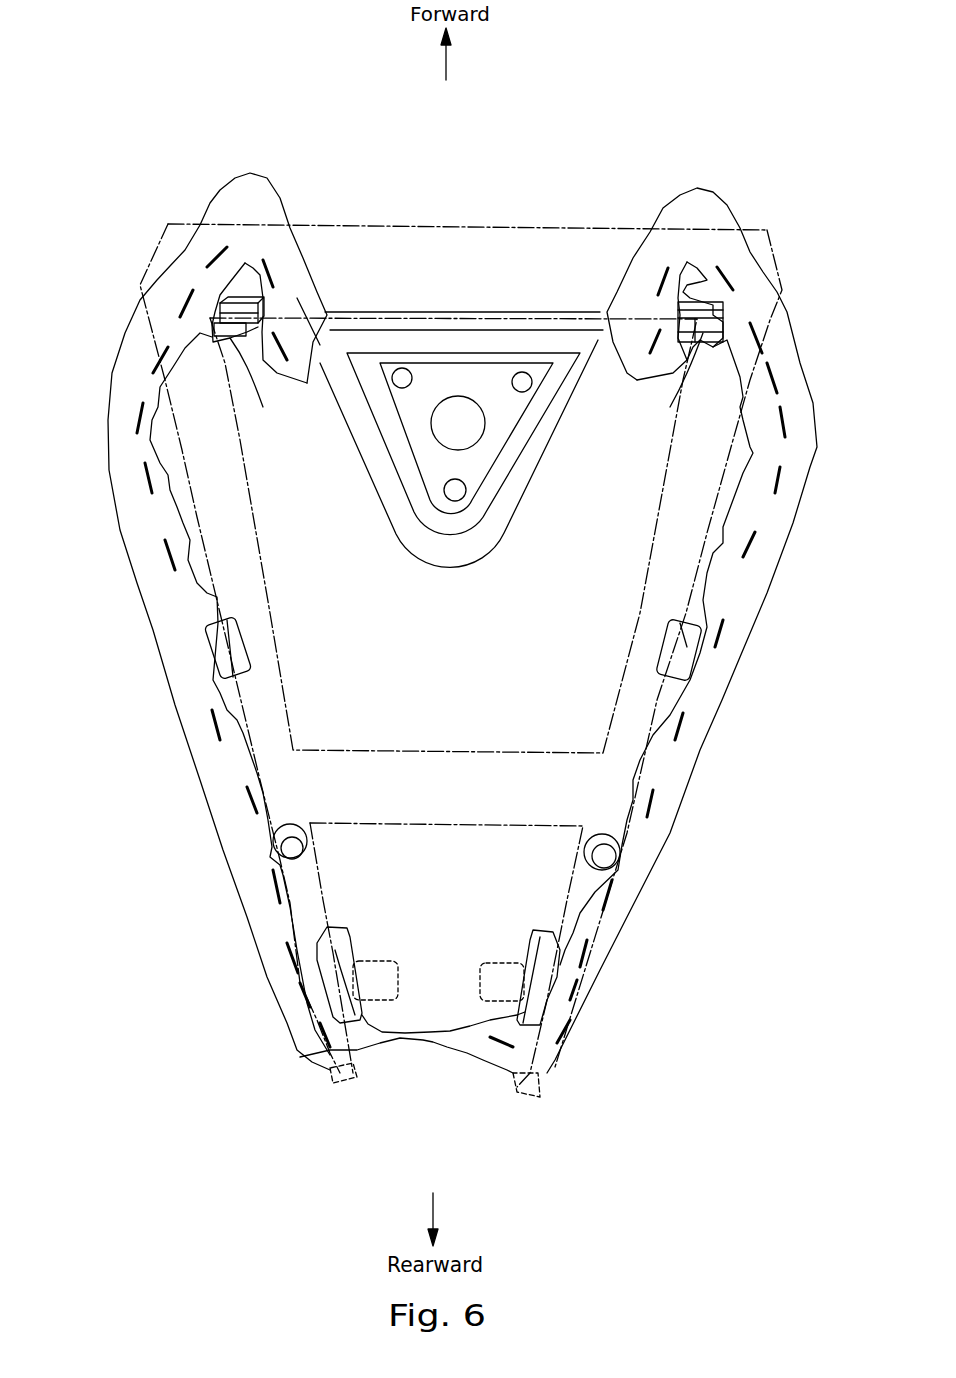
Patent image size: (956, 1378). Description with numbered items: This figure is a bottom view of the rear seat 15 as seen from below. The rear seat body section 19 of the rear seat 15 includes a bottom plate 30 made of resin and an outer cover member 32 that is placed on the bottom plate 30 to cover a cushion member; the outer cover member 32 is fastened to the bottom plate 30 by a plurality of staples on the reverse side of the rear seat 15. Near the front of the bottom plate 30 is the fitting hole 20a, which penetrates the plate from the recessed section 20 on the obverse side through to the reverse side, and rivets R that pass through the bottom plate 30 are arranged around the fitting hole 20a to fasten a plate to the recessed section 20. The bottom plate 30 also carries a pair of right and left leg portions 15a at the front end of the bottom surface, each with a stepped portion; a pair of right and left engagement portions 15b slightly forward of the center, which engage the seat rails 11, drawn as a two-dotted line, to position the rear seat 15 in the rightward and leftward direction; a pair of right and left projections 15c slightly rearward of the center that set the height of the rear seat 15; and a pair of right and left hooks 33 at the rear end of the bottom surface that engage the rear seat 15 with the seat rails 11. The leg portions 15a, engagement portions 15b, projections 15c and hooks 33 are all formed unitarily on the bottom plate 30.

The seat rail 11 is at (207, 583).
The rear seat 15 is at (489, 150).
The leg portion 15a is at (467, 353).
The engagement portion 15b is at (220, 647).
The projection 15c is at (290, 822).
The rear seat body section 19 is at (208, 805).
The recessed section 20 is at (495, 307).
The fitting hole 20a is at (478, 430).
The bottom plate 30 is at (287, 707).
The outer cover member 32 is at (235, 842).
The hook 33 is at (337, 973).
The rivet R is at (453, 490).